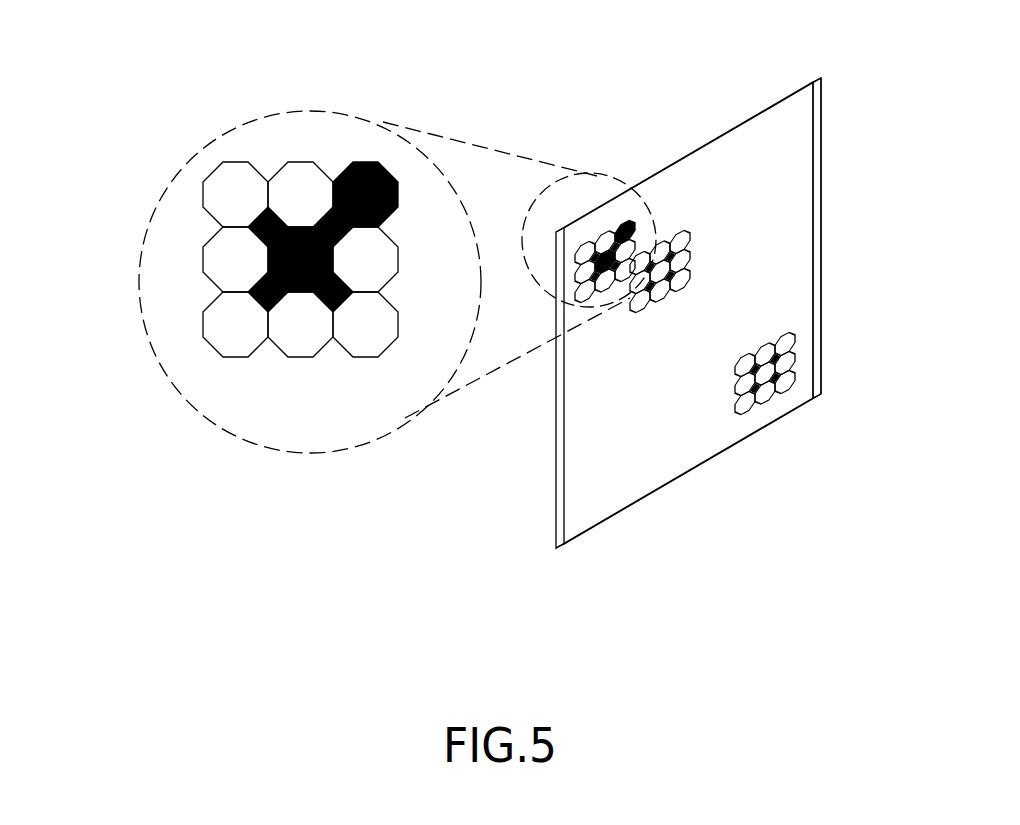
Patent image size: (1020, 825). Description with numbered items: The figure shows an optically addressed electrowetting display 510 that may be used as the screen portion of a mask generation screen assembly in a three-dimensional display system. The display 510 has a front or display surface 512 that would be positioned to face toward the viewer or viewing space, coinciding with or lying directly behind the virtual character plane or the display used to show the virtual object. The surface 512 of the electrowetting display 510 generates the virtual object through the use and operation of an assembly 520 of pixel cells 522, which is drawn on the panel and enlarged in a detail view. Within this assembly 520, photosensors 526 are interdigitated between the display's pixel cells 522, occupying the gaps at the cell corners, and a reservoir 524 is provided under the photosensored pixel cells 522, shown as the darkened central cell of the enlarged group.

The optically addressed electrowetting display 510 is at (848, 94).
The front or display surface 512 is at (805, 246).
The assembly of pixel cells 520 is at (652, 223).
The pixel cells 522 is at (212, 253).
The reservoir 524 is at (317, 330).
The photosensors 526 is at (266, 300).